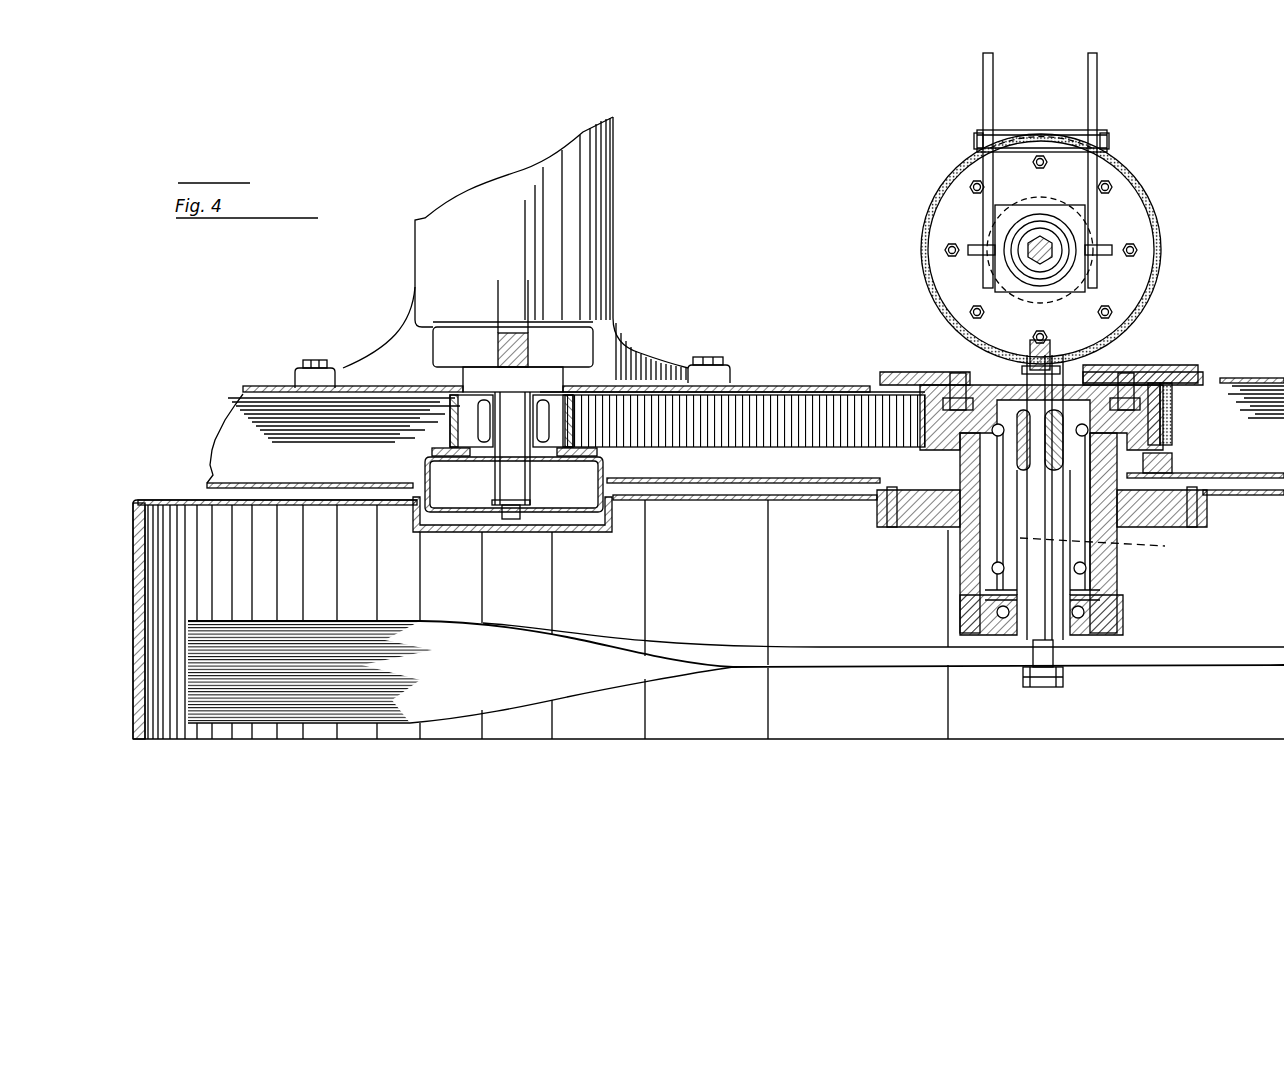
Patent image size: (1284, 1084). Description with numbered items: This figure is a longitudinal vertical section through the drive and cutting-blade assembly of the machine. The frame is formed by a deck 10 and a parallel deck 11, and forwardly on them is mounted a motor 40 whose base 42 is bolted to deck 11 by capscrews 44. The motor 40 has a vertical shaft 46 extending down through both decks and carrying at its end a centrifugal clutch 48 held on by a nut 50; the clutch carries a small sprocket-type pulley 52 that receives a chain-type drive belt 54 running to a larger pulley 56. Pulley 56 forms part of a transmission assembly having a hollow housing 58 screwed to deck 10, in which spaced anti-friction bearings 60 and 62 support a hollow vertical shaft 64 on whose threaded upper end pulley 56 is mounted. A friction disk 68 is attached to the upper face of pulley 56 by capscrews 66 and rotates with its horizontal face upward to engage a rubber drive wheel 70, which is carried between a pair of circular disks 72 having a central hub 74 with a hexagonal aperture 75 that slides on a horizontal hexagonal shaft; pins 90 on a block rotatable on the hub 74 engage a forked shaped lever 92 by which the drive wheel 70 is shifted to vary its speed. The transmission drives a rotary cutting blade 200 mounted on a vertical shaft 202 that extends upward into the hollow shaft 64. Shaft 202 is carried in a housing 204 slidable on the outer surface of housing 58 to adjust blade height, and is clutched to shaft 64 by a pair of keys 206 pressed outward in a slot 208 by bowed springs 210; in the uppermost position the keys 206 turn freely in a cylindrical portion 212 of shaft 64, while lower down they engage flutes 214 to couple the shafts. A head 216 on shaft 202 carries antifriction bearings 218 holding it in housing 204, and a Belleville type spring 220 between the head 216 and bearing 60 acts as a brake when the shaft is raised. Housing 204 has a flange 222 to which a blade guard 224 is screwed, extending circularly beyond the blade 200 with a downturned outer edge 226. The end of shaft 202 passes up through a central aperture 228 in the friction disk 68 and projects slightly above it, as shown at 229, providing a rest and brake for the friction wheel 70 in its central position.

The deck 10 is at (302, 480).
The deck 11 is at (259, 385).
The motor 40 is at (612, 196).
The base 42 is at (664, 345).
The capscrews 44 is at (305, 362).
The vertical shaft 46 is at (492, 408).
The centrifugal clutch 48 is at (455, 505).
The nut 50 is at (515, 512).
The pulley 52 is at (462, 428).
The drive belt 54 is at (766, 400).
The pulley 56 is at (1160, 375).
The hollow housing 58 is at (1175, 460).
The anti-friction bearing 60 is at (990, 585).
The anti-friction bearing 62 is at (1145, 420).
The hollow vertical shaft 64 is at (980, 375).
The capscrews 66 is at (925, 368).
The friction disk 68 is at (1195, 368).
The drive wheel 70 is at (1150, 197).
The circular disks 72 is at (1148, 260).
The hub 74 is at (1038, 234).
The hexagonal aperture 75 is at (1047, 240).
The pins 90 is at (1100, 247).
The forked shaped lever 92 is at (1093, 80).
The rotary cutting blade 200 is at (818, 665).
The vertical shaft 202 is at (1050, 700).
The housing 204 is at (1118, 570).
The keys 206 is at (1085, 380).
The slot 208 is at (1058, 455).
The bowed springs 210 is at (948, 505).
The cylindrical portion 212 is at (1012, 365).
The flutes 214 is at (1105, 545).
The head 216 is at (1052, 618).
The antifriction bearings 218 is at (1110, 618).
The Belleville type spring 220 is at (995, 600).
The flange 222 is at (1205, 512).
The blade guard 224 is at (700, 502).
The downturned outer edge 226 is at (138, 522).
The central aperture 228 is at (1058, 365).
The end of shaft 229 is at (1045, 365).